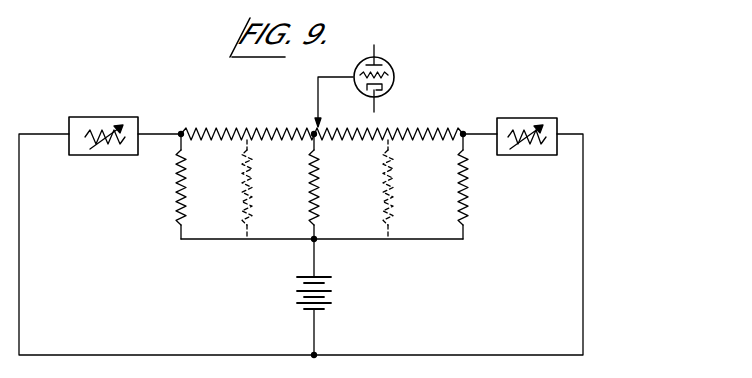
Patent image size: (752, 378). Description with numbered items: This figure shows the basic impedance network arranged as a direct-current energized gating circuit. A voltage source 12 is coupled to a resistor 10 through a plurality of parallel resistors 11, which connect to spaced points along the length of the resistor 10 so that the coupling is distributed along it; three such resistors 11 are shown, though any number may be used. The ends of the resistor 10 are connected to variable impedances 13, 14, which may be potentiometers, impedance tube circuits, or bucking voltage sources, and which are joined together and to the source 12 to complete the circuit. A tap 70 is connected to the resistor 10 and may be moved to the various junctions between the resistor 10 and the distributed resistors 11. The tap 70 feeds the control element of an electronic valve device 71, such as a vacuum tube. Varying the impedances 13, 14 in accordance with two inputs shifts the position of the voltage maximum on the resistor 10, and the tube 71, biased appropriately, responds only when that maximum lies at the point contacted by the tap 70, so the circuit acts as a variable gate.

The resistor 10 is at (262, 127).
The parallel resistors 11 is at (178, 181).
The voltage source 12 is at (337, 296).
The variable impedance 13 is at (84, 116).
The variable impedance 14 is at (517, 118).
The tap 70 is at (321, 109).
The electronic valve device 71 is at (396, 76).